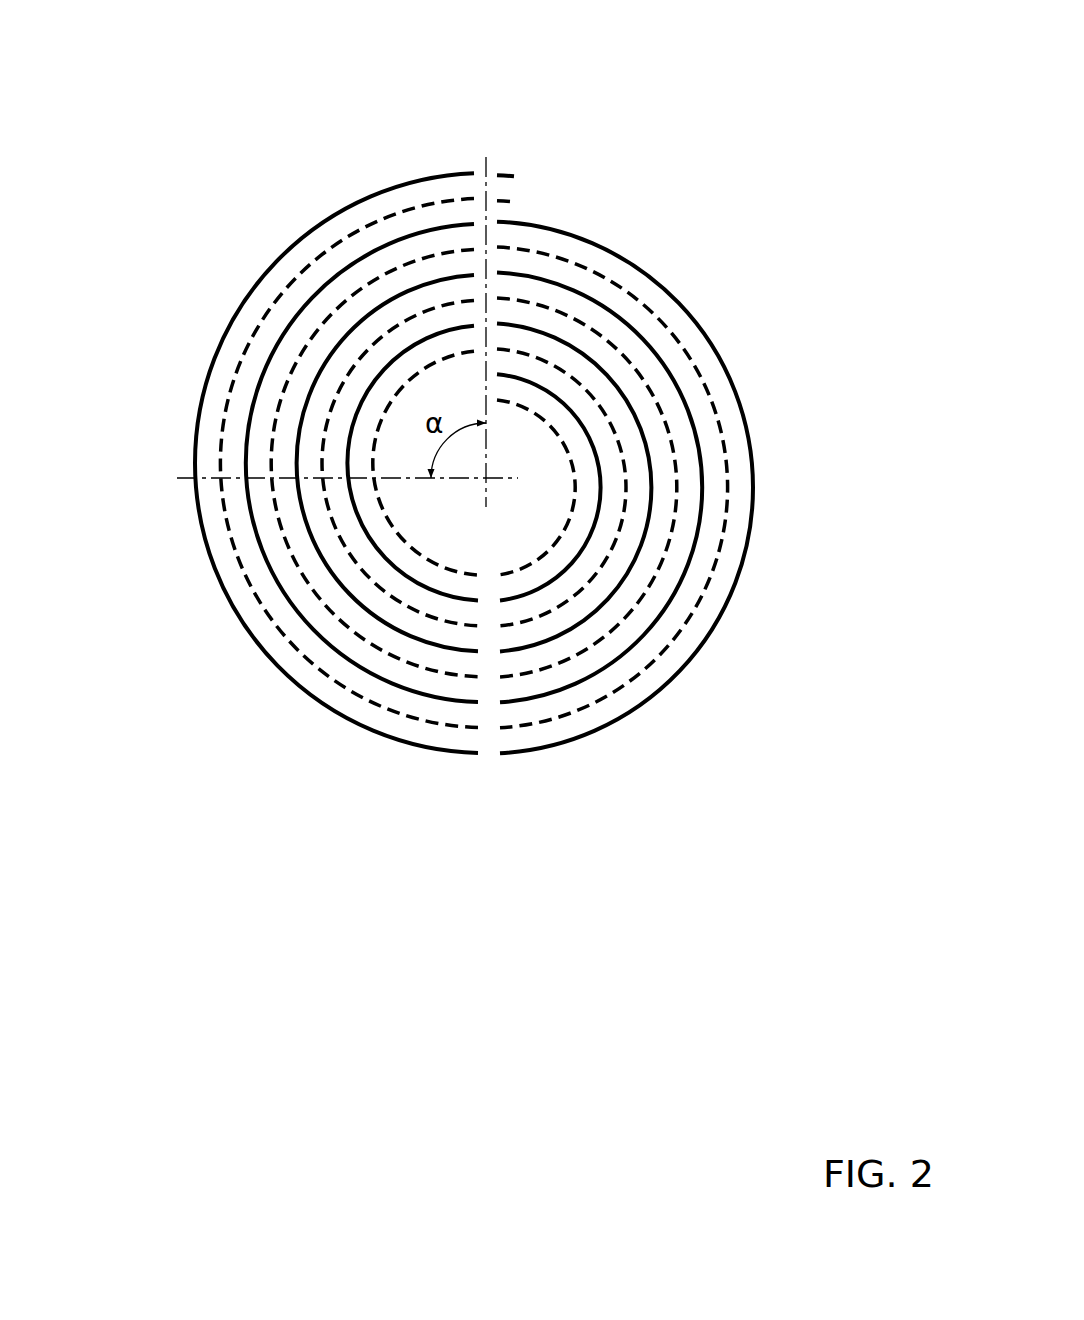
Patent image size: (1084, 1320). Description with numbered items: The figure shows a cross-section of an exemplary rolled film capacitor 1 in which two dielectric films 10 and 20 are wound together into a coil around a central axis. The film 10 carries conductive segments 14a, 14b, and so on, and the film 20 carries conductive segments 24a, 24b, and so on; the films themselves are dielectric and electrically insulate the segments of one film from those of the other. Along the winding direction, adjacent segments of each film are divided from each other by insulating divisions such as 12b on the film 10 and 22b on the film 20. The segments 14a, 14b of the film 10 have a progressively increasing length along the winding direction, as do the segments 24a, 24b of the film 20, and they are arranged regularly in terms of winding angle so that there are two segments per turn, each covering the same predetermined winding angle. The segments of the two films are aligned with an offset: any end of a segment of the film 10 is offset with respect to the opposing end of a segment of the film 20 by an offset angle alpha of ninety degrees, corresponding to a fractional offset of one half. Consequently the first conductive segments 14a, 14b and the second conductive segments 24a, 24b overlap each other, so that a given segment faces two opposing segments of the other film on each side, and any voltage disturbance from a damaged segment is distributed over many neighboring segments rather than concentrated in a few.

The rolled film capacitor 1 is at (482, 474).
The film 10 is at (449, 191).
The film 20 is at (323, 273).
The insulating division 12b is at (490, 602).
The segment 14a is at (540, 381).
The segment 14b is at (398, 580).
The insulating division 22b is at (577, 477).
The segment 24a is at (557, 422).
The segment 24b is at (468, 578).